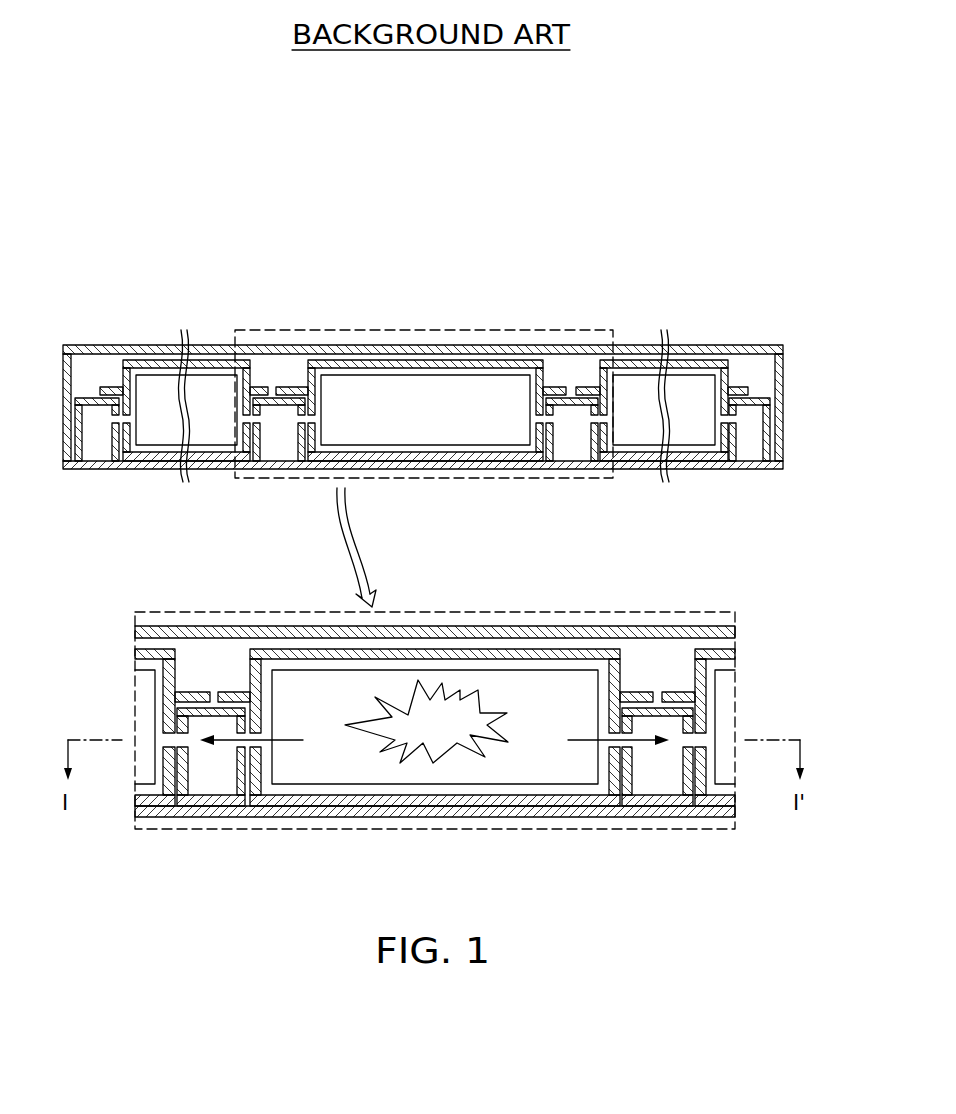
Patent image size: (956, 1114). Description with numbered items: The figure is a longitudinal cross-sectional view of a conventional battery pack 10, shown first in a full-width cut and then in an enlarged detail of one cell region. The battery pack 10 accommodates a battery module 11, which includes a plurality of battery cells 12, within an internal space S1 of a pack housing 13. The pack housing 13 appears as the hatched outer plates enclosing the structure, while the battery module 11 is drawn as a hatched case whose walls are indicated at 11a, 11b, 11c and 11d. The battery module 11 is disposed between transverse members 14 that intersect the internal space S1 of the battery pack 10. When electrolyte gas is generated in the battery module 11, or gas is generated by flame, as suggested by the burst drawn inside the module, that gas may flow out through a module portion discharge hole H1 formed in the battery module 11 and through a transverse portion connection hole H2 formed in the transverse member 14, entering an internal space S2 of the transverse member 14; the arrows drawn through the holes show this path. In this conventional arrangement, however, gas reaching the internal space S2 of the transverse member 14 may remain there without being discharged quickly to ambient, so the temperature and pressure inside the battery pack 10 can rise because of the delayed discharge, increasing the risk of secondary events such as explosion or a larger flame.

The battery pack 10 is at (98, 254).
The battery module 11 is at (426, 354).
The bottom wall of case 11a is at (592, 806).
The side wall of case 11b is at (648, 723).
The top wall of case 11c is at (590, 654).
The flange portion 11d is at (641, 694).
The battery cell 12 is at (497, 775).
The pack housing 13 is at (71, 380).
The transverse member 14 is at (206, 800).
The module portion discharge hole H1 is at (248, 744).
The transverse portion connection hole H2 is at (236, 746).
The internal space of pack housing S1 is at (667, 658).
The internal space of transverse member S2 is at (655, 763).